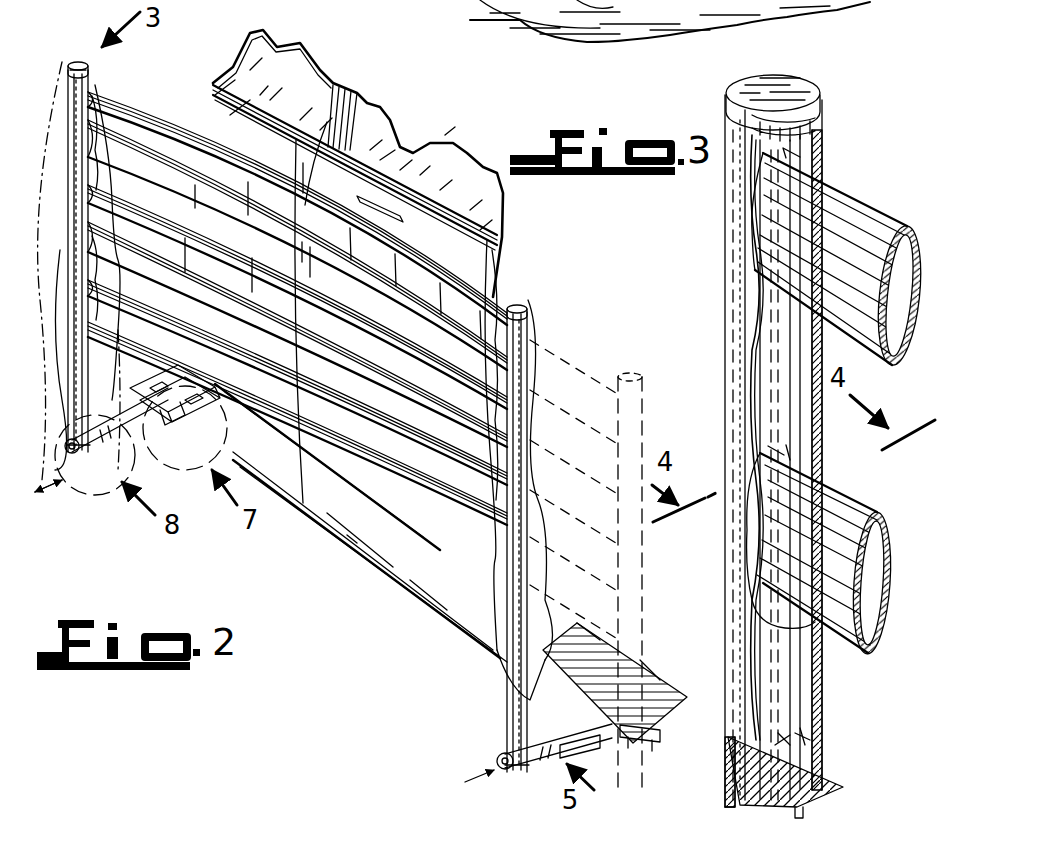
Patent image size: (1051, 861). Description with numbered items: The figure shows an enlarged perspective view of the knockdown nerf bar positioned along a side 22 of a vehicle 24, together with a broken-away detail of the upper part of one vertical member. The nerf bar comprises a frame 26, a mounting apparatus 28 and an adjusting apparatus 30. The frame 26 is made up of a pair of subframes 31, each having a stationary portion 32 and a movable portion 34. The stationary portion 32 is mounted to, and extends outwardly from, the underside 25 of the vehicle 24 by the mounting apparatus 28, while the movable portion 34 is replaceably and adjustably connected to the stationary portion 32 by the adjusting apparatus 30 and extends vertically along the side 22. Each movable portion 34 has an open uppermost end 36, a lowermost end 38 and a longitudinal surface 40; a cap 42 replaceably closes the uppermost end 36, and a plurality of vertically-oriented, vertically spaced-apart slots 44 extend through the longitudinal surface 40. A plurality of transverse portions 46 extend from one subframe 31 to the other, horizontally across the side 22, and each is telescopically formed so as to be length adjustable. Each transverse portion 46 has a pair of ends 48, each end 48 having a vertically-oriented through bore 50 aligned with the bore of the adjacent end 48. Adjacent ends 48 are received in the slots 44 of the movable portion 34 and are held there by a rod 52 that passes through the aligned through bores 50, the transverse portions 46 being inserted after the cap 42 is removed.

In FIG. 2, the side 22 is at (215, 128).
In FIG. 2, the vehicle 24 is at (211, 83).
In FIG. 2, the underside 25 is at (660, 678).
In FIG. 2, the frame 26 is at (140, 106).
In FIG. 2, the mounting apparatus 28 is at (164, 365).
In FIG. 2, the adjusting apparatus 30 is at (98, 480).
In FIG. 2, the subframe 31 is at (482, 453).
In FIG. 3, the subframe 31 is at (722, 290).
In FIG. 2, the stationary portion 32 is at (194, 392).
In FIG. 2, the movable portion 34 is at (78, 262).
In FIG. 2, the uppermost end 36 is at (68, 72).
In FIG. 3, the uppermost end 36 is at (730, 128).
In FIG. 2, the lowermost end 38 is at (68, 462).
In FIG. 2, the longitudinal surface 40 is at (90, 348).
In FIG. 3, the longitudinal surface 40 is at (745, 330).
In FIG. 2, the cap 42 is at (80, 60).
In FIG. 3, the cap 42 is at (795, 82).
In FIG. 2, the slots 44 is at (98, 80).
In FIG. 2, the transverse portions 46 is at (418, 262).
In FIG. 3, the transverse portions 46 is at (860, 205).
In FIG. 2, the ends 48 is at (97, 170).
In FIG. 3, the ends 48 is at (758, 235).
In FIG. 3, the through bore 50 is at (820, 158).
In FIG. 3, the rod 52 is at (740, 368).